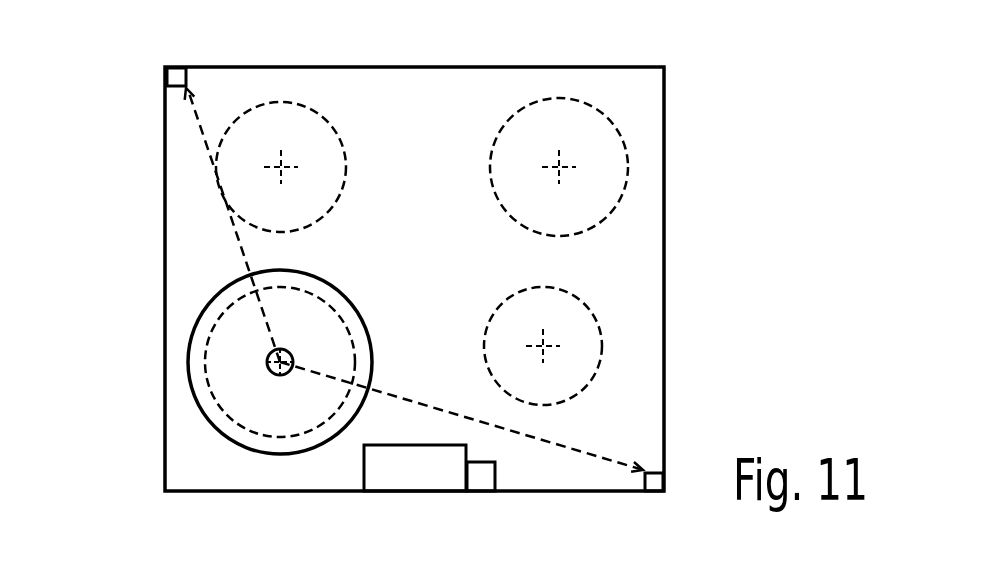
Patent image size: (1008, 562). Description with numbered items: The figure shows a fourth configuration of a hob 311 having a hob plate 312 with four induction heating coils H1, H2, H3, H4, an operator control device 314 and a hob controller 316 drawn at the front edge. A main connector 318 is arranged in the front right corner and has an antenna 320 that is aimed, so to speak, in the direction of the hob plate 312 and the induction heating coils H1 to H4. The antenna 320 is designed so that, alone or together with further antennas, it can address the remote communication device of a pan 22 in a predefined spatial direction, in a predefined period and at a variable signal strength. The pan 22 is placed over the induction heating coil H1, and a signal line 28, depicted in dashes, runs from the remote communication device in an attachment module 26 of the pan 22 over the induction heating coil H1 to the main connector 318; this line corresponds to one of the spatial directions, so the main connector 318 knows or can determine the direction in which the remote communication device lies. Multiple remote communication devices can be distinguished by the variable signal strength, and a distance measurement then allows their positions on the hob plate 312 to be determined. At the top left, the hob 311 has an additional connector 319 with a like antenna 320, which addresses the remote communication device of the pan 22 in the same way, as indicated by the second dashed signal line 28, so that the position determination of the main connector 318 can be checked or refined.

The hob 311 is at (759, 98).
The hob plate 312 is at (657, 122).
The operator control device 314 is at (402, 478).
The hob controller 316 is at (496, 479).
The main connector 318 is at (661, 473).
The additional connector 319 is at (187, 84).
The antenna 320 is at (166, 98).
The pan 22 is at (231, 284).
The attachment module 26 is at (267, 358).
The signal line 28 is at (239, 240).
The induction heating coil H1 is at (205, 369).
The induction heating coil H2 is at (229, 128).
The induction heating coil H3 is at (628, 167).
The induction heating coil H4 is at (602, 343).